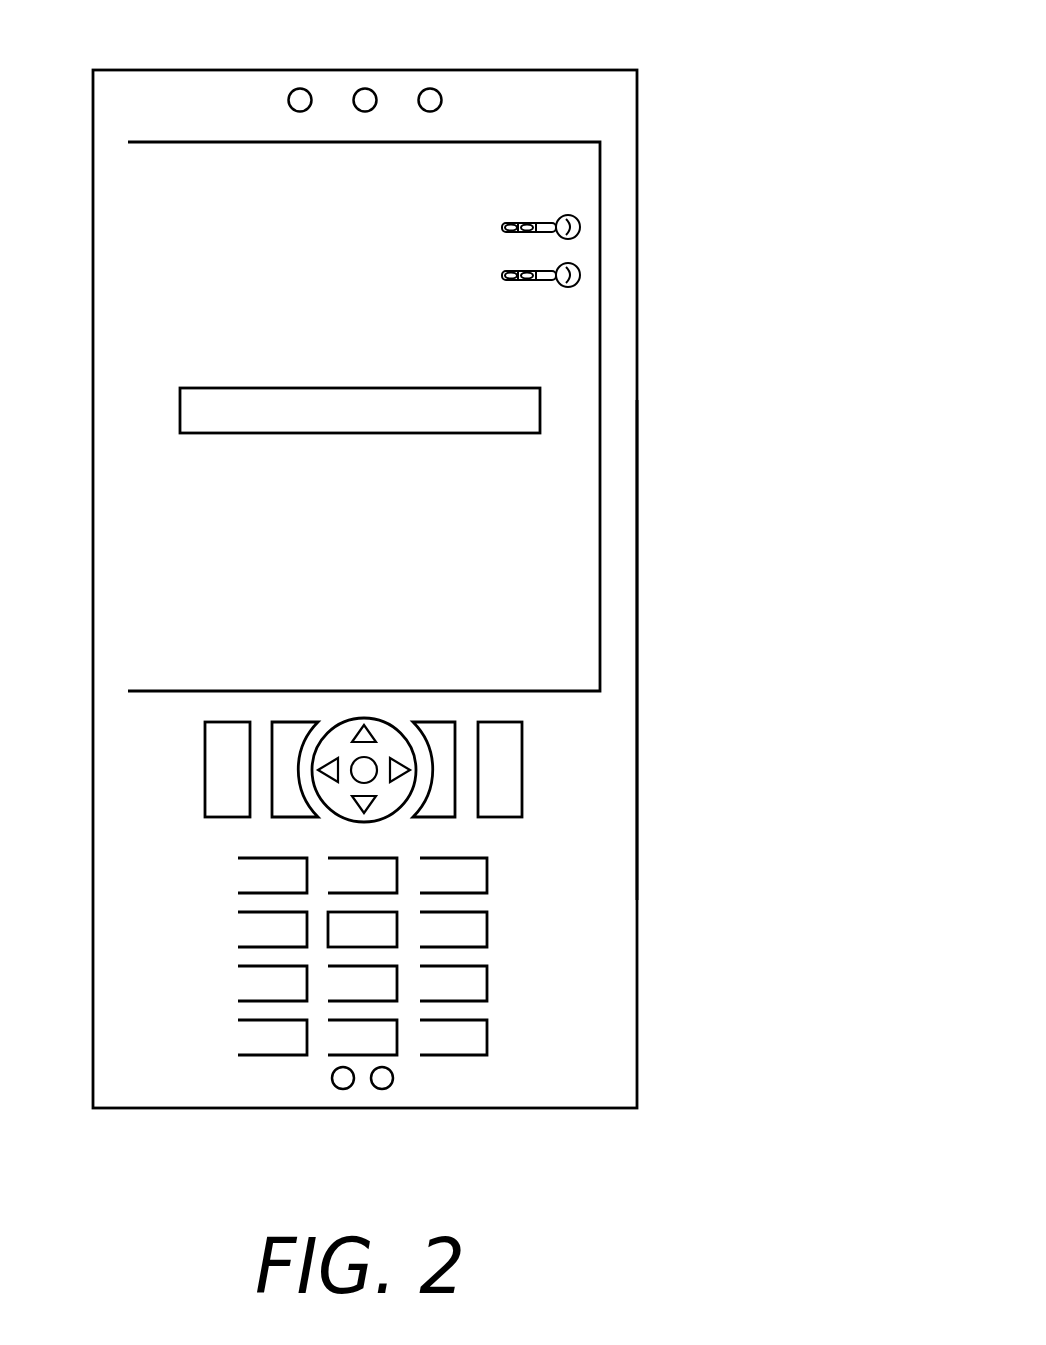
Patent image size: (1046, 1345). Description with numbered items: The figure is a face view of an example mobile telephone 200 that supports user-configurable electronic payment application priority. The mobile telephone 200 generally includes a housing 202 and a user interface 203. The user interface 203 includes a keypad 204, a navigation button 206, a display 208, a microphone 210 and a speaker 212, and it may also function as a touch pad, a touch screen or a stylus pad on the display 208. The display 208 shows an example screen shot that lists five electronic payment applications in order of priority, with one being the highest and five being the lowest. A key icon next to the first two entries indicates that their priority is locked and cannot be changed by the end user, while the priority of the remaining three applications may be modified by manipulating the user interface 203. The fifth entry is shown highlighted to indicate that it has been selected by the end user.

The mobile telephone 200 is at (718, 1200).
The housing 202 is at (612, 70).
The user interface 203 is at (612, 502).
The keypad 204 is at (485, 958).
The navigation button 206 is at (391, 814).
The display 208 is at (528, 142).
The microphone 210 is at (394, 1079).
The speaker 212 is at (365, 88).